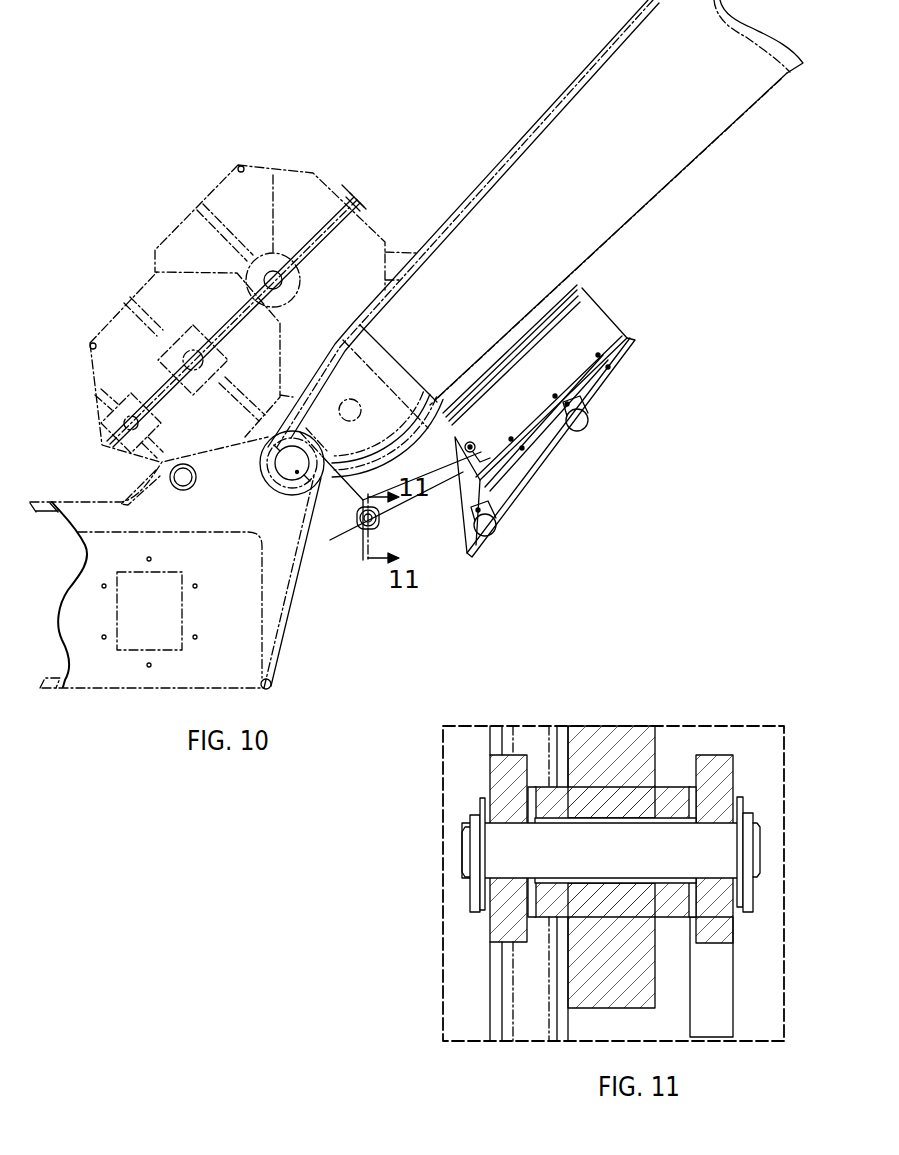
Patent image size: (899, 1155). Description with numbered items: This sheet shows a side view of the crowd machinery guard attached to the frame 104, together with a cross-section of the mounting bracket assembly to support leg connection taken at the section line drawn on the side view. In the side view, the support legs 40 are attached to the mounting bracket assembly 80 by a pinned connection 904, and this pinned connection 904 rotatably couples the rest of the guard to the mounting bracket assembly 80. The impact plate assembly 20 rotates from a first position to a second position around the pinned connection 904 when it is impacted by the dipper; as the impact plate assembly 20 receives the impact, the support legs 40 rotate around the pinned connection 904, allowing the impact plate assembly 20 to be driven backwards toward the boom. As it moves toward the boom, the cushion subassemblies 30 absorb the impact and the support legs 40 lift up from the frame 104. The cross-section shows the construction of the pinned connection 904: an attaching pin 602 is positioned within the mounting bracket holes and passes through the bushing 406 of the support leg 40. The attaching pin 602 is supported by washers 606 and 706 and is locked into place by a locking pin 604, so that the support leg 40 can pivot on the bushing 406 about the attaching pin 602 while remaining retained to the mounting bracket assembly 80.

In FIG. 10, the impact plate assembly 20 is at (603, 393).
In FIG. 10, the cushion subassemblies 30 is at (596, 321).
In FIG. 10, the support legs 40 is at (295, 617).
In FIG. 11, the support legs 40 is at (608, 726).
In FIG. 10, the mounting bracket assembly 80 is at (362, 514).
In FIG. 11, the mounting bracket assembly 80 is at (717, 1027).
In FIG. 10, the frame 104 is at (270, 632).
In FIG. 10, the pinned connection 904 is at (360, 516).
In FIG. 11, the bushing 406 is at (672, 783).
In FIG. 11, the washer 706 is at (695, 782).
In FIG. 11, the washer 606 is at (740, 797).
In FIG. 11, the locking pin 604 is at (748, 817).
In FIG. 11, the attaching pin 602 is at (760, 875).